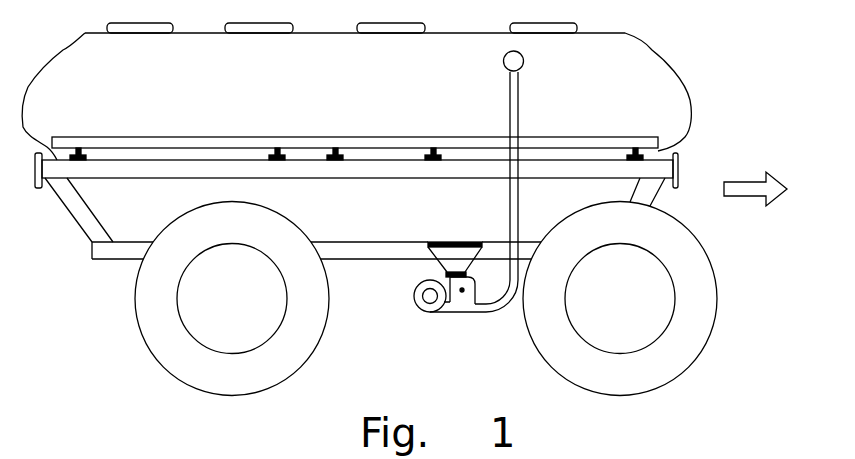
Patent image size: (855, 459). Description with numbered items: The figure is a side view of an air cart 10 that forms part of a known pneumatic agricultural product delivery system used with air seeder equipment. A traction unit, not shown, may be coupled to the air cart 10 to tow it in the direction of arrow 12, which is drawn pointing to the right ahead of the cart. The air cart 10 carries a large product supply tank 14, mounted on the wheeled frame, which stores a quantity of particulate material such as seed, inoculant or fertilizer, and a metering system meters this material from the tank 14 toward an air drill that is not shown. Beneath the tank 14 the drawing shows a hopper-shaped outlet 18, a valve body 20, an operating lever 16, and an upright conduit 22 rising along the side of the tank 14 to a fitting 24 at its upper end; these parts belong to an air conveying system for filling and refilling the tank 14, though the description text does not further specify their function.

The air cart 10 is at (90, 268).
The arrow 12 is at (753, 180).
The product supply tank 14 is at (406, 82).
The lever 16 is at (425, 306).
The hopper 18 is at (452, 242).
The valve 20 is at (468, 294).
The pipe 22 is at (510, 302).
The pipe fitting 24 is at (523, 60).